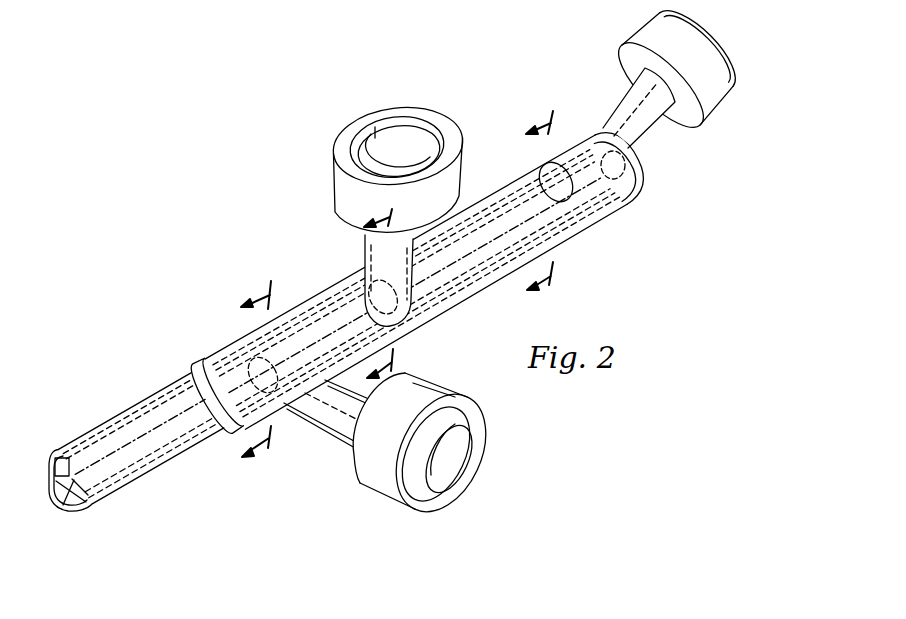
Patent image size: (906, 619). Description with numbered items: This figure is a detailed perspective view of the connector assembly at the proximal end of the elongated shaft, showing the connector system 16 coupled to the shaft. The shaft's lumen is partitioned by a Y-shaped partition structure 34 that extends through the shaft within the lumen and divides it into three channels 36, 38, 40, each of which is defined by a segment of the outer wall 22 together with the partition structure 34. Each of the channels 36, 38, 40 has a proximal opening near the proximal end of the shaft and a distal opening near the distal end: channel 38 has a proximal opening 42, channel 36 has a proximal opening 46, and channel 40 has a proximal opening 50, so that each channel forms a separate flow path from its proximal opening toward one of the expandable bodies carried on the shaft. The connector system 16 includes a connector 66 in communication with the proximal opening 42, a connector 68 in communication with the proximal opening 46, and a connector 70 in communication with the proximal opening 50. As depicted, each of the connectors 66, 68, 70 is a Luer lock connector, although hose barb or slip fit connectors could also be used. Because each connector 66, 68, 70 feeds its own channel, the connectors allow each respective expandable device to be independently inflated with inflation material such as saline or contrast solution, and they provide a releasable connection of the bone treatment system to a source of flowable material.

The connector system 16 is at (250, 102).
The outer wall 22 is at (130, 463).
The partition structure 34 is at (638, 165).
The channel 36 is at (615, 193).
The channel 38 is at (610, 130).
The channel 40 is at (597, 228).
The proximal opening 42 is at (547, 175).
The proximal opening 46 is at (425, 304).
The proximal opening 50 is at (237, 355).
The connector 66 is at (712, 38).
The connector 68 is at (378, 110).
The connector 70 is at (475, 470).